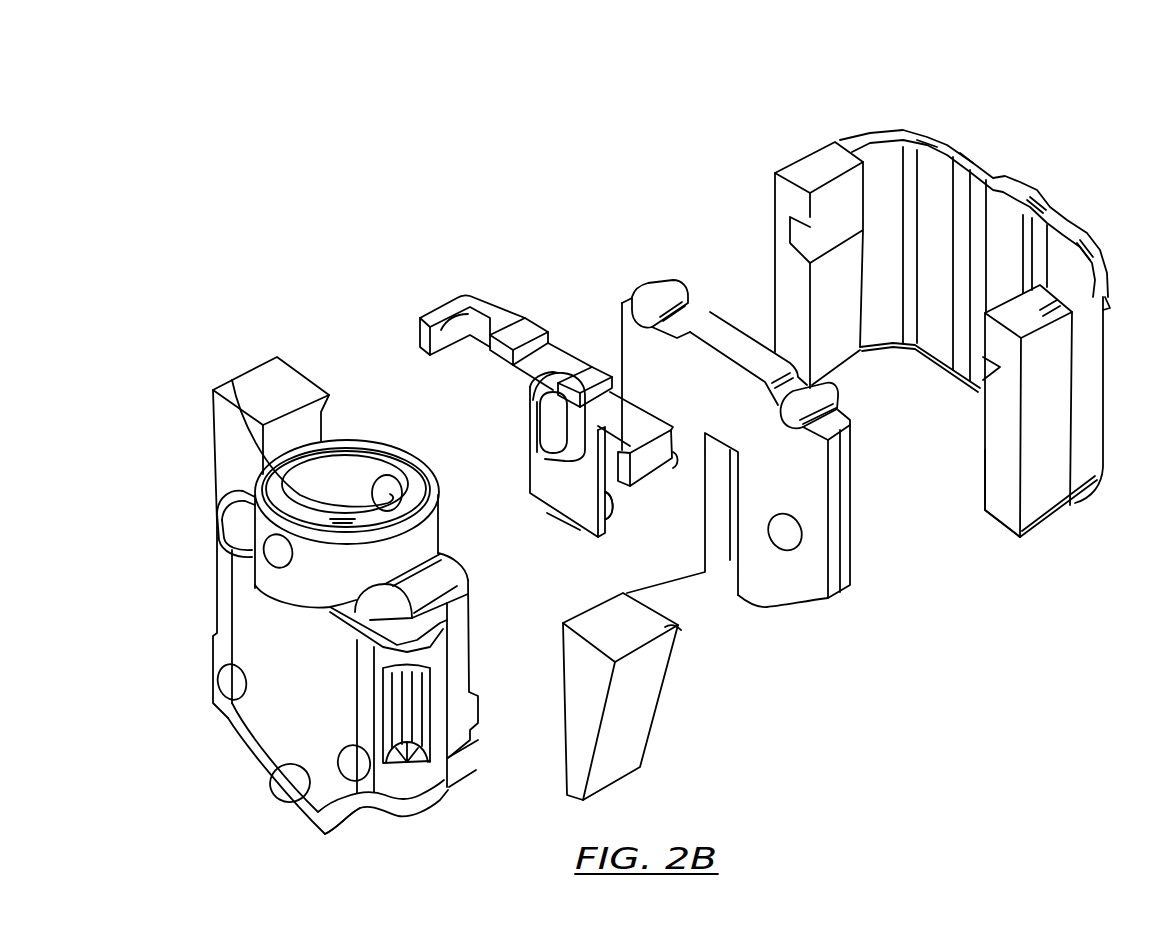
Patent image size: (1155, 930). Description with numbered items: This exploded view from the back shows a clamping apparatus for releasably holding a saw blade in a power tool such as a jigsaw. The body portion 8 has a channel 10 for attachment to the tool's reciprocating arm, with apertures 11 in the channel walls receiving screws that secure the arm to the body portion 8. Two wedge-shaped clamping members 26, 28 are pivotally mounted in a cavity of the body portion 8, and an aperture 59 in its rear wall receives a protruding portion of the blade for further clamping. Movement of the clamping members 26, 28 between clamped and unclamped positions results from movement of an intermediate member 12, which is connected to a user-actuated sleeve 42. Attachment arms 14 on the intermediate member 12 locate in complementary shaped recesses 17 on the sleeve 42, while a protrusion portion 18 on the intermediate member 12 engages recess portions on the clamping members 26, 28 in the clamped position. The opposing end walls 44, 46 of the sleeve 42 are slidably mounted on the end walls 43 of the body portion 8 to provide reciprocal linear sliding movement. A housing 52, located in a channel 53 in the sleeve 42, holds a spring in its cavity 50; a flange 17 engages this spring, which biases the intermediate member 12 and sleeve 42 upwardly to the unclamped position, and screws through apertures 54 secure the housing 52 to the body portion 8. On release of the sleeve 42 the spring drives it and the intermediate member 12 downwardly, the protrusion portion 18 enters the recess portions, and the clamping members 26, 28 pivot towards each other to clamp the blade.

The body portion 8 is at (325, 573).
The channel 10 is at (348, 467).
The apertures 11 is at (262, 552).
The intermediate member 12 is at (544, 366).
The attachment arms 14 is at (474, 306).
The recesses 17 is at (610, 523).
The protrusion portion 18 is at (455, 292).
The clamping member 26 is at (265, 385).
The clamping member 28 is at (677, 632).
The sleeve 42 is at (1088, 388).
The end walls 43 is at (327, 834).
The end wall 44 is at (903, 148).
The end wall 46 is at (978, 460).
The cavity 50 is at (739, 419).
The housing 52 is at (637, 338).
The channel 53 is at (960, 242).
The apertures 54 is at (786, 532).
The aperture 59 is at (290, 783).